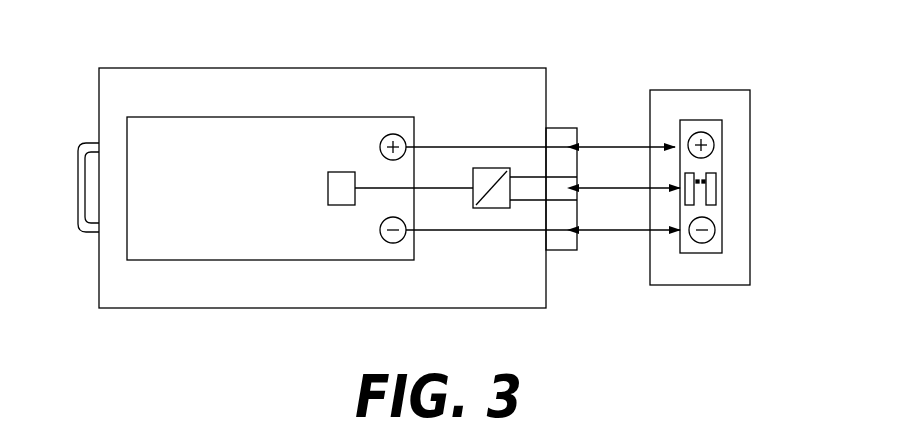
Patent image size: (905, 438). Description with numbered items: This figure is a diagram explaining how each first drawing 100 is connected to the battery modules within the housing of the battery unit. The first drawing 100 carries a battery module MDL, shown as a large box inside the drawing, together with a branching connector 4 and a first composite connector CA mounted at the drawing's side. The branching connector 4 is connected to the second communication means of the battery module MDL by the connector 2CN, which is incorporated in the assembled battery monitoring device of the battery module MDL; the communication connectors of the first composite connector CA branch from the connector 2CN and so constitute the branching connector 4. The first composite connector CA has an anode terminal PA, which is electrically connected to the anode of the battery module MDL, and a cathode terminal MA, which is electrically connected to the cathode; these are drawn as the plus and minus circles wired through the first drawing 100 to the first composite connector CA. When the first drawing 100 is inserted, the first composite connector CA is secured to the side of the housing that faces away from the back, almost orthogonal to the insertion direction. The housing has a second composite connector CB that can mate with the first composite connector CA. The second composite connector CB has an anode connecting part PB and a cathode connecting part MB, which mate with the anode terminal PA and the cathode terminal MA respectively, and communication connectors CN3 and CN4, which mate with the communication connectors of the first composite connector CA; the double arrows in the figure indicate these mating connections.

The first drawing 100 is at (433, 68).
The battery module MDL is at (245, 125).
The connector 2CN is at (345, 174).
The branching connector 4 is at (490, 168).
The first composite connector CA is at (562, 128).
The anode terminal PA is at (568, 147).
The cathode terminal MA is at (560, 251).
The second composite connector CB is at (700, 119).
The anode connecting part PB is at (714, 145).
The cathode connecting part MB is at (714, 221).
The communication connector CN3 is at (717, 180).
The communication connector CN4 is at (680, 197).